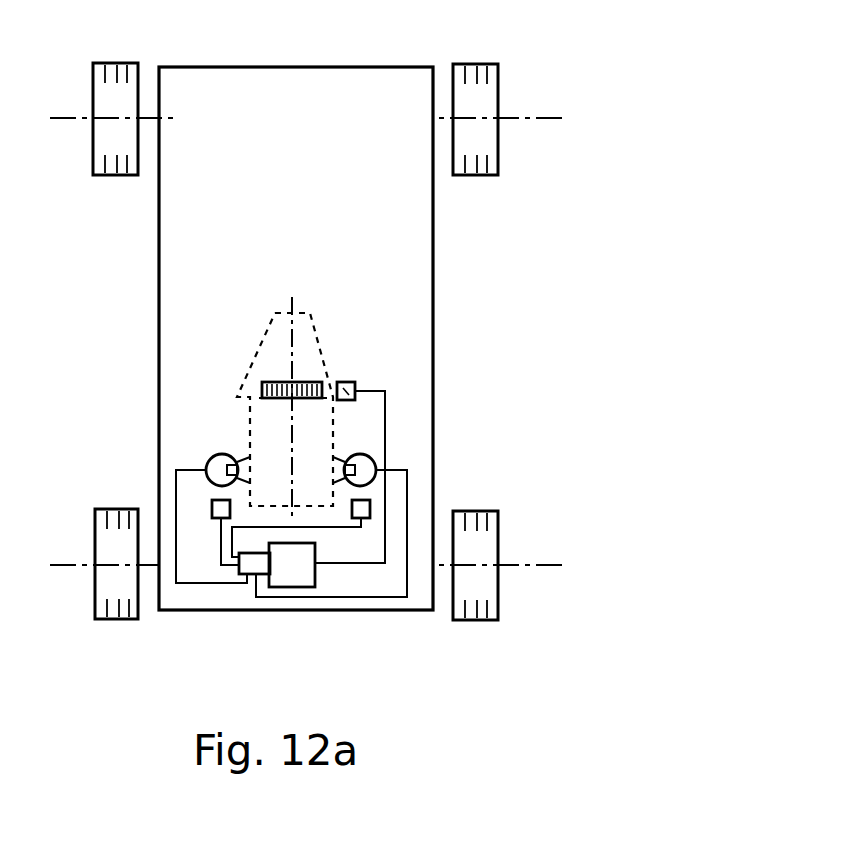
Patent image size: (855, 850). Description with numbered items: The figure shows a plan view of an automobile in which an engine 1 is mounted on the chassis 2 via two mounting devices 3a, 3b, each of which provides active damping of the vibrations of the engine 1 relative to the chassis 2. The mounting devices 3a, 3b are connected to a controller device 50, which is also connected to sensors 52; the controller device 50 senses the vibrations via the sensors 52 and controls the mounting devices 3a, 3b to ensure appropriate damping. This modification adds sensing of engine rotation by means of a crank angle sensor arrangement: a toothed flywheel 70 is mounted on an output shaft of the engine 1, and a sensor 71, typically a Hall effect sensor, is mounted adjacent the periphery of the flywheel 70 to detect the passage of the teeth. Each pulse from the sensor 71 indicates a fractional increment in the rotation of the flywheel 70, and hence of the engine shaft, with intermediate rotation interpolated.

The chassis 2 is at (348, 67).
The engine 1 is at (323, 475).
The toothed flywheel 70 is at (300, 380).
The sensor 71 is at (352, 381).
The mounting device 3a is at (210, 458).
The mounting device 3b is at (374, 460).
The sensor 52 is at (212, 512).
The controller device 50 is at (293, 582).